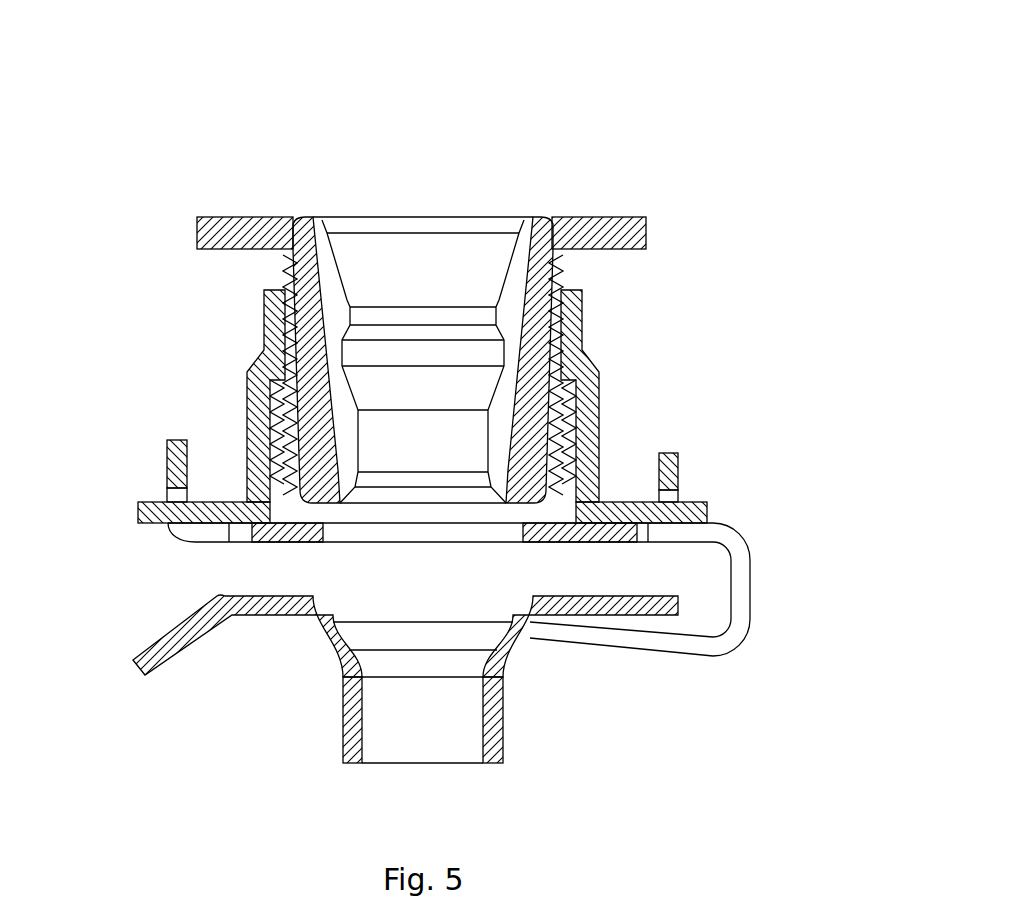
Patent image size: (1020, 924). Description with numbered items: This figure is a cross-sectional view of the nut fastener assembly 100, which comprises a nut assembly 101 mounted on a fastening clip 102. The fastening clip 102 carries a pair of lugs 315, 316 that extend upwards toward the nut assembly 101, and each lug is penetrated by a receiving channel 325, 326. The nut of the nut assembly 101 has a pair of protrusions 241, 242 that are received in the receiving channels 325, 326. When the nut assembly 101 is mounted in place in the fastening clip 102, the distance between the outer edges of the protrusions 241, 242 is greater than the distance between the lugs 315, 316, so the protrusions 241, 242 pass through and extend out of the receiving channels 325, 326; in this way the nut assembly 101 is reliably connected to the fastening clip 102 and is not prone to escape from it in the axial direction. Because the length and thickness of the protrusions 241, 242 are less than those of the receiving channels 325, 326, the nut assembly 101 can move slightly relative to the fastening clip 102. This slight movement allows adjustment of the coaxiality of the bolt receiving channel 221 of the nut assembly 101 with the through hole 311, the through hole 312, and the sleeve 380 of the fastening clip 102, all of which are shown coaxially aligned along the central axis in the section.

The nut fastener assembly 100 is at (620, 132).
The nut assembly 101 is at (632, 218).
The bolt receiving channel 221 is at (480, 272).
The lug 315 is at (167, 460).
The lug 316 is at (673, 455).
The receiving channel 325 is at (172, 495).
The receiving channel 326 is at (668, 495).
The protrusion 241 is at (150, 515).
The protrusion 242 is at (707, 503).
The through hole 311 is at (370, 535).
The fastening clip 102 is at (750, 620).
The through hole 312 is at (440, 610).
The sleeve 380 is at (393, 718).